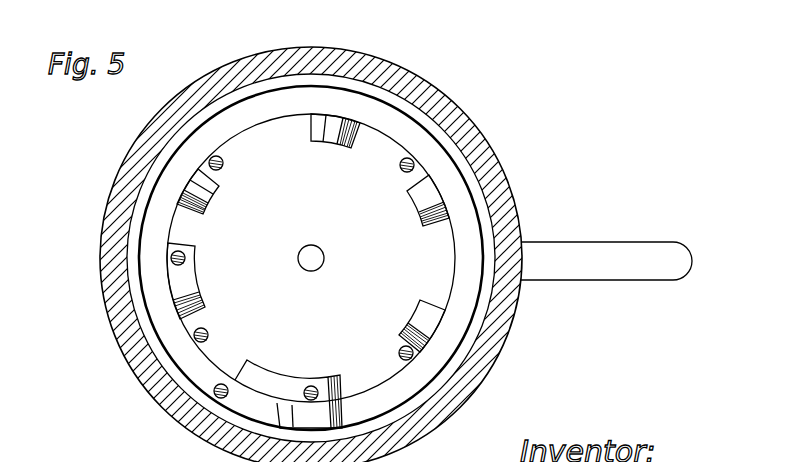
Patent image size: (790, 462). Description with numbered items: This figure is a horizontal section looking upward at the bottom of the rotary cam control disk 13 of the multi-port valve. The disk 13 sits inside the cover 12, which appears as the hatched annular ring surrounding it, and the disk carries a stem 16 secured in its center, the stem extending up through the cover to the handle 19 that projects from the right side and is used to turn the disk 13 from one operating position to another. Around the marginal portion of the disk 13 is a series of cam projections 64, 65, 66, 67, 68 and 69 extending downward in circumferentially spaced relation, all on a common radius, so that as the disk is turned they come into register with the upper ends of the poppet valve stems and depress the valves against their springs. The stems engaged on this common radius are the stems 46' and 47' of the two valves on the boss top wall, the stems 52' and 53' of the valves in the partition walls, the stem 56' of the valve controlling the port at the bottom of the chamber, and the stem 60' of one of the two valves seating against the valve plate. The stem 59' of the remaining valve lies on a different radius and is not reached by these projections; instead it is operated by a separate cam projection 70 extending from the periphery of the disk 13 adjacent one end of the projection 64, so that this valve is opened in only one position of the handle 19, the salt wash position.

The cover 12 is at (433, 97).
The rotary cam control disk 13 is at (443, 233).
The stem 16 is at (323, 255).
The handle 19 is at (558, 246).
The valve stem 47' is at (216, 144).
The valve stem 53' is at (423, 161).
The valve stem 56' is at (165, 247).
The valve stem 60' is at (193, 353).
The valve stem 59' is at (235, 401).
The valve stem 46' is at (339, 379).
The valve stem 52' is at (416, 367).
The cam projection 64 is at (279, 380).
The cam projection 65 is at (420, 320).
The cam projection 66 is at (432, 193).
The cam projection 67 is at (328, 146).
The cam projection 68 is at (209, 202).
The cam projection 69 is at (190, 280).
The cam projection 70 is at (340, 414).